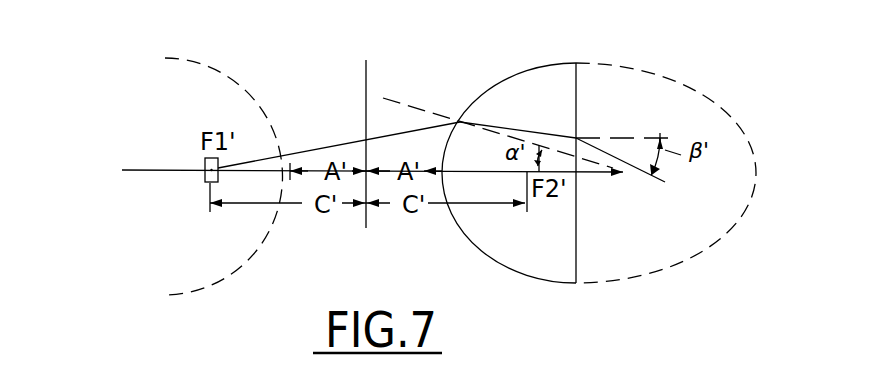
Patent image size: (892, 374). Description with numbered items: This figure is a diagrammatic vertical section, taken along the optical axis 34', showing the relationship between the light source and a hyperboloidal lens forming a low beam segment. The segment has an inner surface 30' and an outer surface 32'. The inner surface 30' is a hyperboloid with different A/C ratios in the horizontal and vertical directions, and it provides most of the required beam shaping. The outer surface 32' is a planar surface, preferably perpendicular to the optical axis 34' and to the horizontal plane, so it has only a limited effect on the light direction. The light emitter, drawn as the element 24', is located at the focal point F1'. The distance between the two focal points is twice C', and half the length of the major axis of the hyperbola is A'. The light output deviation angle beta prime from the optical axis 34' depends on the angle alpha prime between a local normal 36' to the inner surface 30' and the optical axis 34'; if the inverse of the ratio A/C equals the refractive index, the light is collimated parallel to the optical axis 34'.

The optical axis 34' is at (372, 144).
The light source 24' is at (186, 188).
The inner surface 30' is at (509, 158).
The outer surface 32' is at (666, 154).
The local normal 36' is at (498, 114).